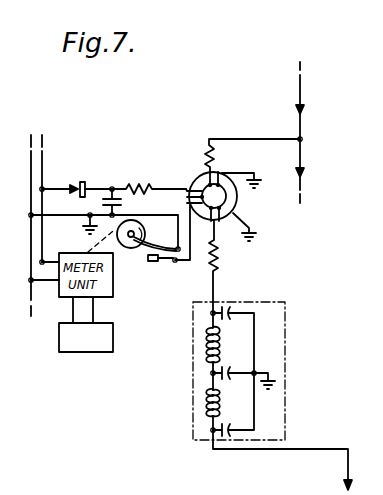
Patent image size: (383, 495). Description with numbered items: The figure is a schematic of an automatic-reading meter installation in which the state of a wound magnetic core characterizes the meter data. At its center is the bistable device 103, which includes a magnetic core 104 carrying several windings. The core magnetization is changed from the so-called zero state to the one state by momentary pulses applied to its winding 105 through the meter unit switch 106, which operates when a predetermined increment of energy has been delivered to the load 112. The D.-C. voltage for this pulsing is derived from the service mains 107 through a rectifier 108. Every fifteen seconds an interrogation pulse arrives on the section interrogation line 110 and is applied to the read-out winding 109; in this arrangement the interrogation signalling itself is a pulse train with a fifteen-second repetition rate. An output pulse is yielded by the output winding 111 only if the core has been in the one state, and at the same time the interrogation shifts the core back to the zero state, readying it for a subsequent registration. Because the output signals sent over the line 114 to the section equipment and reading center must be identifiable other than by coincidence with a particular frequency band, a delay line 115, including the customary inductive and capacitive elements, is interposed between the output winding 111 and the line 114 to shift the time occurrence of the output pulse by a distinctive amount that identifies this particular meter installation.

The bistable device 103 is at (192, 175).
The magnetic core 104 is at (239, 208).
The winding 105 is at (189, 206).
The meter unit switch 106 is at (153, 264).
The service mains 107 is at (33, 167).
The rectifier 108 is at (98, 178).
The read-out winding 109 is at (219, 158).
The section interrogation line 110 is at (303, 94).
The output winding 111 is at (215, 232).
The load 112 is at (93, 352).
The line 114 is at (312, 449).
The delay line 115 is at (193, 422).